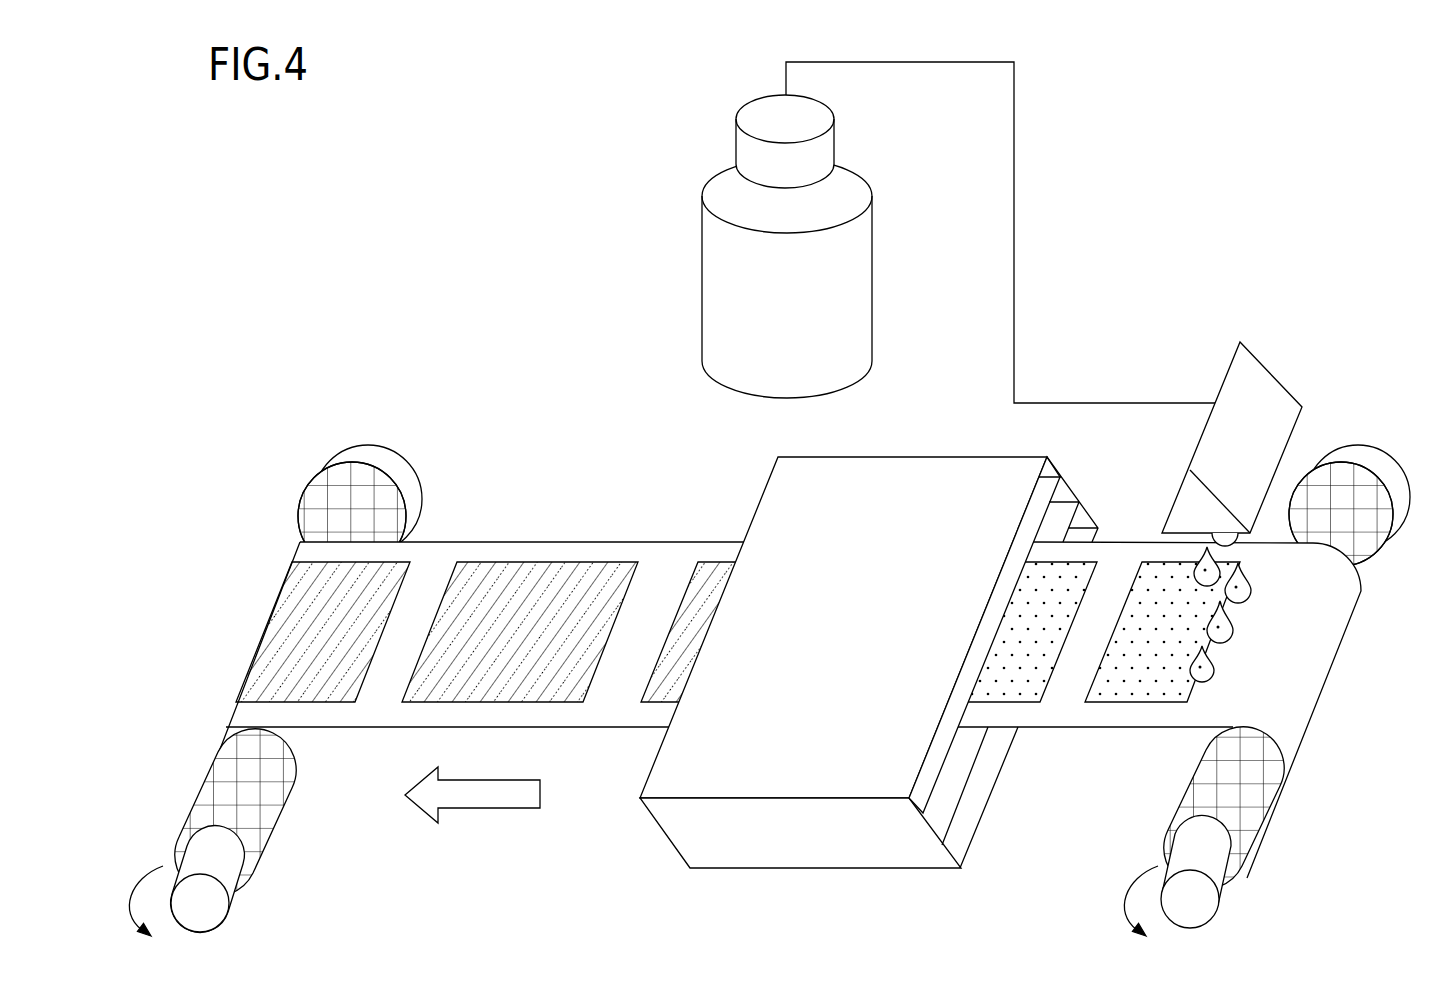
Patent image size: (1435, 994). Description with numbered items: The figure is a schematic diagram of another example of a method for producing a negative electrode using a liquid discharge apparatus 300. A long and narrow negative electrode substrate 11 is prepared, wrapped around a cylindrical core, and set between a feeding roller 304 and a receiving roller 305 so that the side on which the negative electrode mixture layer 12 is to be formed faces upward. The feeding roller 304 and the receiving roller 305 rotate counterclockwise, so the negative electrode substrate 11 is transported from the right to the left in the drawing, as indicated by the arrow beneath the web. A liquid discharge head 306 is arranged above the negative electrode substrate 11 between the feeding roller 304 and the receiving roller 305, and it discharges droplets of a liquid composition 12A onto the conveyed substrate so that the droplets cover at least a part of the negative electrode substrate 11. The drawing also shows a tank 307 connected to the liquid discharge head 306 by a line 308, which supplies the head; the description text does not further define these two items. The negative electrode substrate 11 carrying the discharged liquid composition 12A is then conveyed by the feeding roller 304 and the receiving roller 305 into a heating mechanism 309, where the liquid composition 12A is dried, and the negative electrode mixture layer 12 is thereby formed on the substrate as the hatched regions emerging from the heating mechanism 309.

The liquid discharge apparatus 300 is at (1118, 70).
The negative electrode substrate 11 is at (1302, 655).
The negative electrode mixture layer 12 is at (527, 584).
The liquid composition 12A is at (1123, 686).
The feeding roller 304 is at (1282, 879).
The receiving roller 305 is at (292, 882).
The liquid discharge head 306 is at (1262, 393).
The ink tank 307 is at (727, 281).
The ink supply tube 308 is at (1015, 150).
The heating mechanism 309 is at (912, 448).